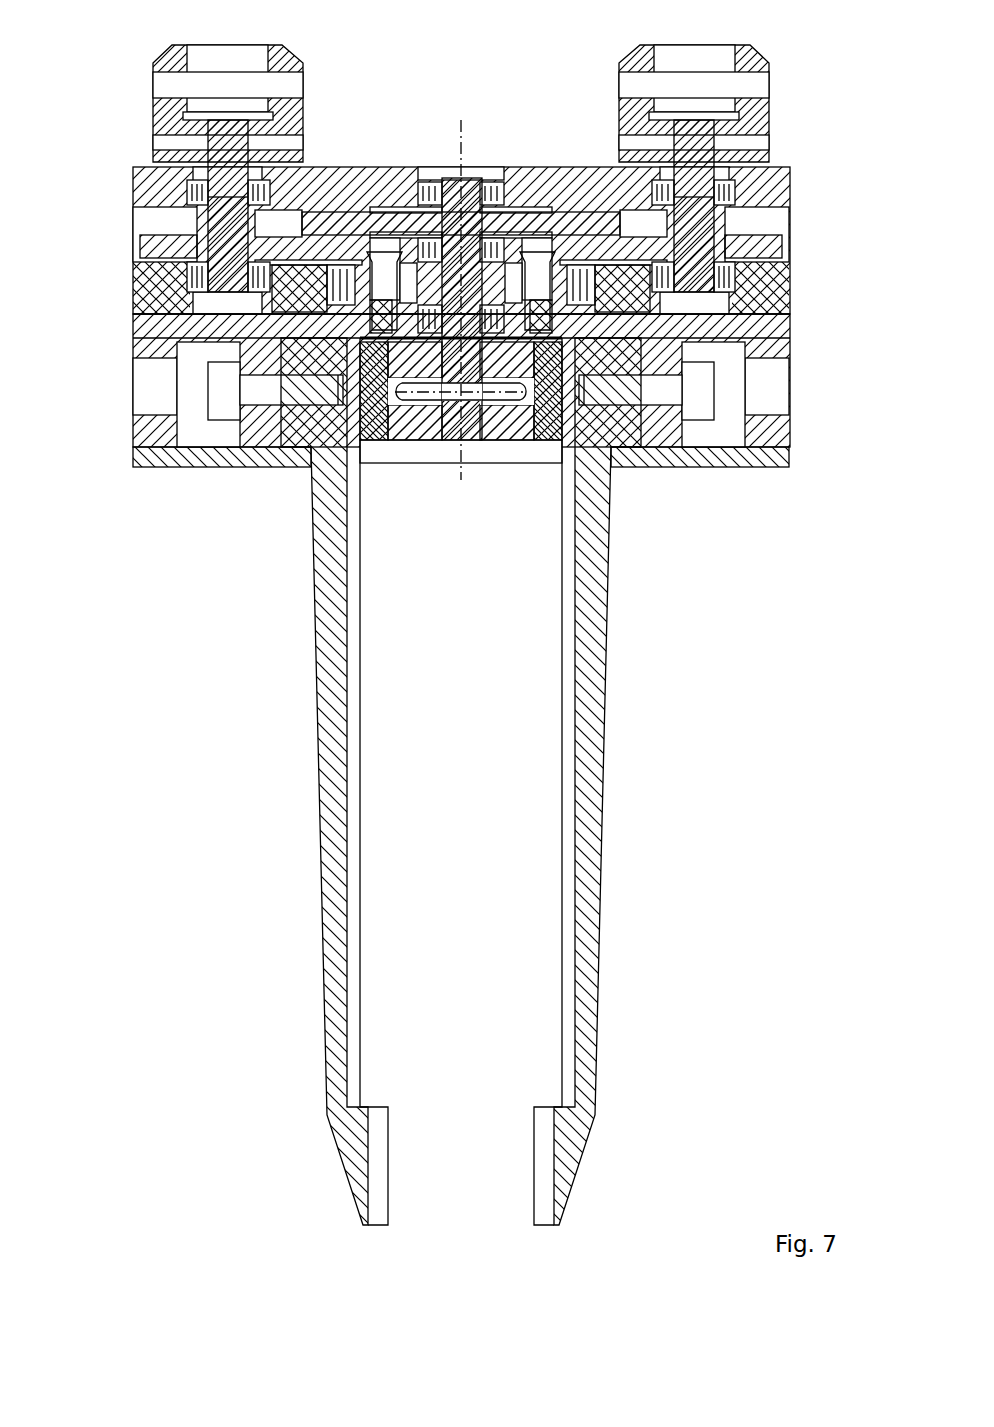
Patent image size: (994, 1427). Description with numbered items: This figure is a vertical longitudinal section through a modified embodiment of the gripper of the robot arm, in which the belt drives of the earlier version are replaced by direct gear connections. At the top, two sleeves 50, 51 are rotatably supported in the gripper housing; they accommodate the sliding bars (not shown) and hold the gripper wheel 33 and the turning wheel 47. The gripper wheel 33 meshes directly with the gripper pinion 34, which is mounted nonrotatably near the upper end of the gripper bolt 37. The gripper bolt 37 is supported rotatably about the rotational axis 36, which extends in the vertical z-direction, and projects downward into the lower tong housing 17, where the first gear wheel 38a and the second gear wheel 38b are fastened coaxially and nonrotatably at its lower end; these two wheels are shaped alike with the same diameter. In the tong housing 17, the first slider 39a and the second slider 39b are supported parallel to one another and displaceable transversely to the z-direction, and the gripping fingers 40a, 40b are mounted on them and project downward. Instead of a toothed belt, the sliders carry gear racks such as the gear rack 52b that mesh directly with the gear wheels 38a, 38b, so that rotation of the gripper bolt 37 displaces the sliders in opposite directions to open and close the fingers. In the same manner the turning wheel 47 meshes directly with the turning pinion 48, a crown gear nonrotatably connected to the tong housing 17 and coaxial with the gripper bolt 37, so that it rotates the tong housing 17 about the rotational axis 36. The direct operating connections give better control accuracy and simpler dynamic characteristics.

The tong housing 17 is at (760, 344).
The gripper wheel 33 is at (757, 232).
The gripper pinion 34 is at (540, 218).
The rotational axis 36 is at (456, 150).
The gripper bolt 37 is at (472, 175).
The first gear wheel 38a is at (415, 355).
The second gear wheel 38b is at (410, 423).
The first slider 39a is at (262, 425).
The second slider 39b is at (667, 430).
The gripping finger 40a is at (335, 668).
The gripping finger 40b is at (596, 672).
The turning wheel 47 is at (148, 246).
The turning pinion 48 is at (337, 244).
The sleeve 50 is at (773, 105).
The sleeve 51 is at (153, 102).
The gear rack 52b is at (550, 427).